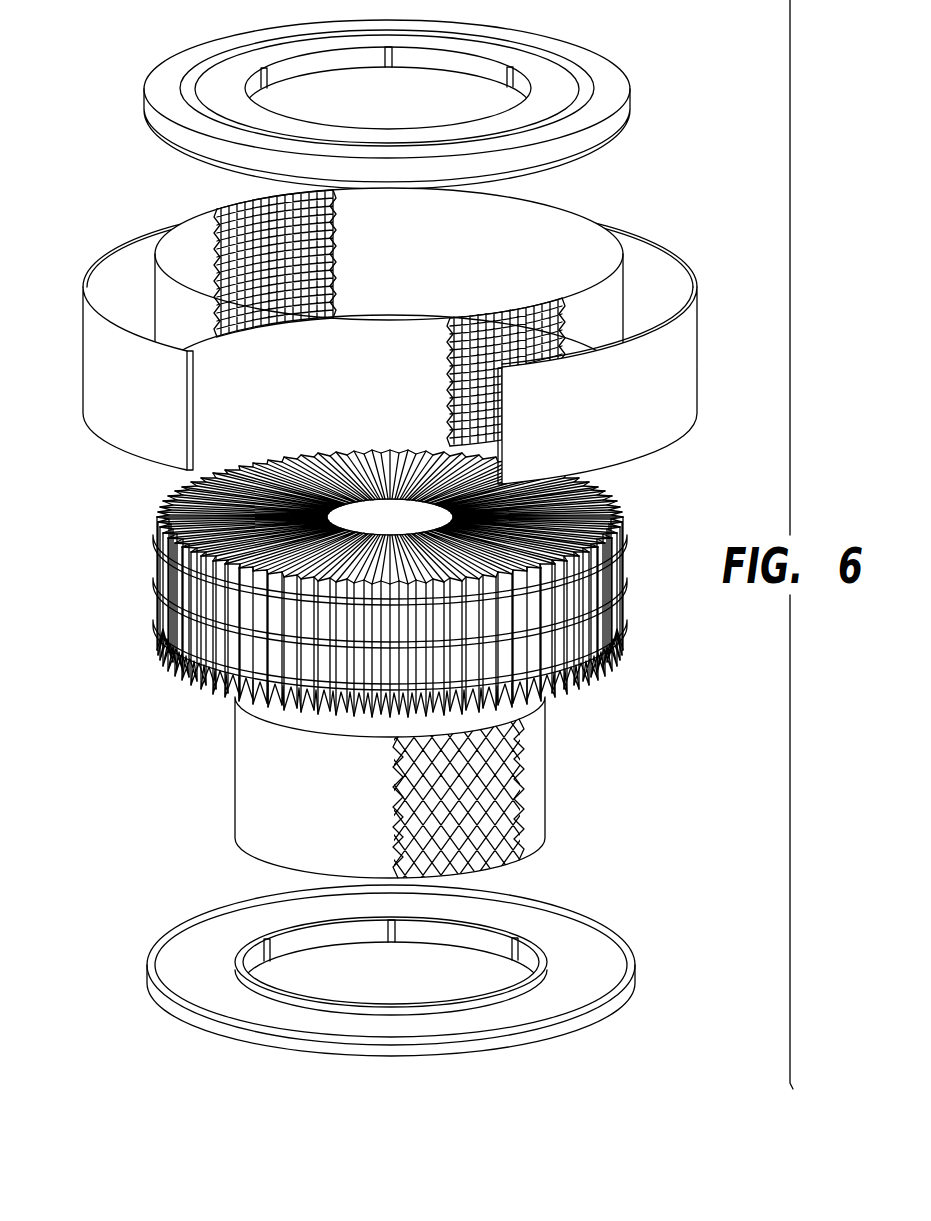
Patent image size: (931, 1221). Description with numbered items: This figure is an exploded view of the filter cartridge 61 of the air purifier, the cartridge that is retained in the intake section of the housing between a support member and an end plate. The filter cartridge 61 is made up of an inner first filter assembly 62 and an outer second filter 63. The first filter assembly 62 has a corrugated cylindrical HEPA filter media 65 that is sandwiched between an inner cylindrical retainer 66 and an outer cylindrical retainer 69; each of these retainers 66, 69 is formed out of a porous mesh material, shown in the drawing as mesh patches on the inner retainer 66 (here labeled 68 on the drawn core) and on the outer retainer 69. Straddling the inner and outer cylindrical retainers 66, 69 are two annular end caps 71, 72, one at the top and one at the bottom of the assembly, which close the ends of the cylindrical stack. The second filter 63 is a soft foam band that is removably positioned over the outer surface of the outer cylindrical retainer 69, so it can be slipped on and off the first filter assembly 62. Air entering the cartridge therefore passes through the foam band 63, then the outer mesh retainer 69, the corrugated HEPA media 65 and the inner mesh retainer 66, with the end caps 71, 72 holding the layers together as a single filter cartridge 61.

The filter cartridge 61 is at (395, 591).
The first filter assembly 62 is at (633, 570).
The second filter 63 is at (390, 308).
The corrugated cylindrical HEPA filter media 65 is at (156, 496).
The inner cylindrical retainer 66 is at (449, 787).
The mesh screen of core tube 68 is at (405, 789).
The outer cylindrical retainer 69 is at (247, 207).
The annular end cap 71 is at (630, 985).
The annular end cap 72 is at (620, 84).